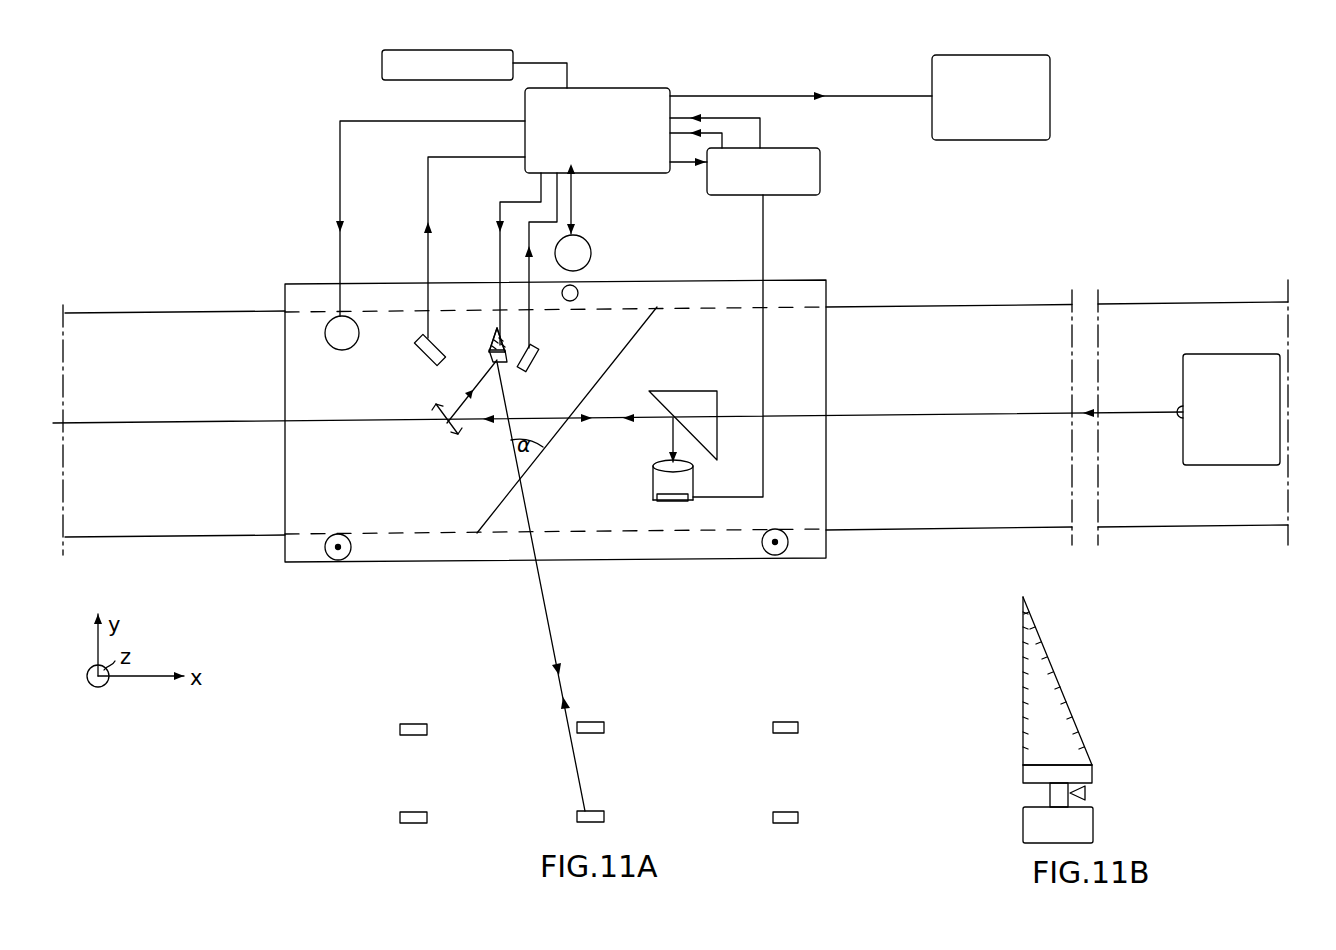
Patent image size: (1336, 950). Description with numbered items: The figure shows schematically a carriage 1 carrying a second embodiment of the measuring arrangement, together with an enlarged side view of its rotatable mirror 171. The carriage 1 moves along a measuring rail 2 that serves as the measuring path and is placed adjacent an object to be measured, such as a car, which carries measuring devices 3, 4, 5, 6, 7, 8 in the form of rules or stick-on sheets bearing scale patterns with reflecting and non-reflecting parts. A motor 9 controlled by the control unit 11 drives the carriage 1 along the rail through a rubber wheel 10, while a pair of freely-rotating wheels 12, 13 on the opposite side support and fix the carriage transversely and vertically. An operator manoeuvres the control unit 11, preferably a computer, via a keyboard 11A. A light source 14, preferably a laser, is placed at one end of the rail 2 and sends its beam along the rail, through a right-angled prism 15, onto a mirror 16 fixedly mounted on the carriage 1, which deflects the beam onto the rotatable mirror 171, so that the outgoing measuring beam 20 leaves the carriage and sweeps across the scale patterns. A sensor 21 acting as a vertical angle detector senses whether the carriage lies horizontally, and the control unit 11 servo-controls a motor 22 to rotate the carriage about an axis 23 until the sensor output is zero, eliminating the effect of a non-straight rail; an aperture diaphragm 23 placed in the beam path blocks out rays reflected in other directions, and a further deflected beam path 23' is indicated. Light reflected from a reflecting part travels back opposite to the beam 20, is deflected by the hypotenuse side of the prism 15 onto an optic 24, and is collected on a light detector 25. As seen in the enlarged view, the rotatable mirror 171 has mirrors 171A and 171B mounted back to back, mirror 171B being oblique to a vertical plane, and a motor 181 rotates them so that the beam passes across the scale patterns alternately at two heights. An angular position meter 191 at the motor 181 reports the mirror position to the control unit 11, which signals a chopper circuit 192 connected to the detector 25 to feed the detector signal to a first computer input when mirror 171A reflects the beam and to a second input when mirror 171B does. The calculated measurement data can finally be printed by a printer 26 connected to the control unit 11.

In FIG. 11A, the carriage 1 is at (813, 280).
In FIG. 11A, the measuring rail 2 is at (1024, 302).
In FIG. 11A, the measuring device 3 is at (412, 812).
In FIG. 11A, the measuring device 4 is at (596, 811).
In FIG. 11A, the measuring device 5 is at (785, 812).
In FIG. 11A, the measuring device 6 is at (785, 722).
In FIG. 11A, the measuring device 7 is at (592, 722).
In FIG. 11A, the measuring device 8 is at (410, 724).
In FIG. 11A, the motor 9 is at (579, 237).
In FIG. 11A, the rubber wheel 10 is at (578, 293).
In FIG. 11A, the control unit 11 is at (527, 100).
In FIG. 11A, the keyboard 11A is at (382, 72).
In FIG. 11A, the freely-rotating wheel 12 is at (775, 529).
In FIG. 11A, the freely-rotating wheel 13 is at (340, 534).
In FIG. 11A, the light source 14 is at (1183, 447).
In FIG. 11A, the right-angled prism 15 is at (697, 391).
In FIG. 11A, the mirror 16 is at (450, 434).
In FIG. 11A, the outgoing measuring beam 20 is at (563, 664).
In FIG. 11A, the sensor 21 is at (418, 346).
In FIG. 11A, the motor 22 is at (325, 333).
In FIG. 11A, the aperture diaphragm 23 is at (570, 420).
In FIG. 11A, the deflected light beam path 23' is at (467, 391).
In FIG. 11A, the optic 24 is at (660, 465).
In FIG. 11A, the light detector 25 is at (656, 500).
In FIG. 11A, the printer 26 is at (1015, 127).
In FIG. 11A, the rotatable mirror 171 is at (478, 343).
In FIG. 11A, the mirror 171A is at (500, 372).
In FIG. 11B, the mirror 171A is at (1023, 692).
In FIG. 11A, the mirror 171B is at (503, 338).
In FIG. 11B, the mirror 171B is at (1063, 693).
In FIG. 11A, the motor 181 is at (493, 345).
In FIG. 11B, the motor 181 is at (1093, 835).
In FIG. 11A, the angular position meter 191 is at (538, 364).
In FIG. 11B, the angular position meter 191 is at (1087, 793).
In FIG. 11A, the chopper circuit 192 is at (820, 180).